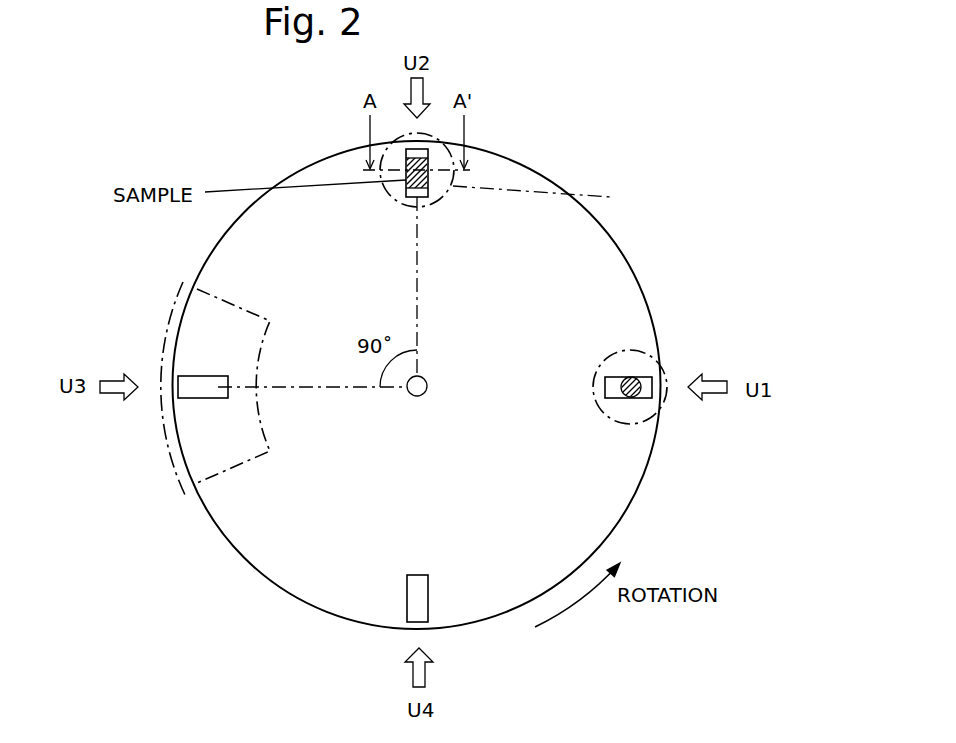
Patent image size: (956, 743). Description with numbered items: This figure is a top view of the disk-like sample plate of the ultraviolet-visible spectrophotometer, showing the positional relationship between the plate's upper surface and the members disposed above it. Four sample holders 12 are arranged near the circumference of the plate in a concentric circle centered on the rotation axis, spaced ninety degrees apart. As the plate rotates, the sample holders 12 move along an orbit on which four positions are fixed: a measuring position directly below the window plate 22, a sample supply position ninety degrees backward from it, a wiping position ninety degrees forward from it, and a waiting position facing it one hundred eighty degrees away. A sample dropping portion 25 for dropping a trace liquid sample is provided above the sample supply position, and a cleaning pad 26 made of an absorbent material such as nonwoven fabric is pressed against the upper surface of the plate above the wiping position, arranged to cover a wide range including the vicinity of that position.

The sample holder 12 is at (406, 192).
The window plate 22 is at (546, 199).
The sample dropping portion 25 is at (643, 422).
The cleaning pad 26 is at (172, 313).